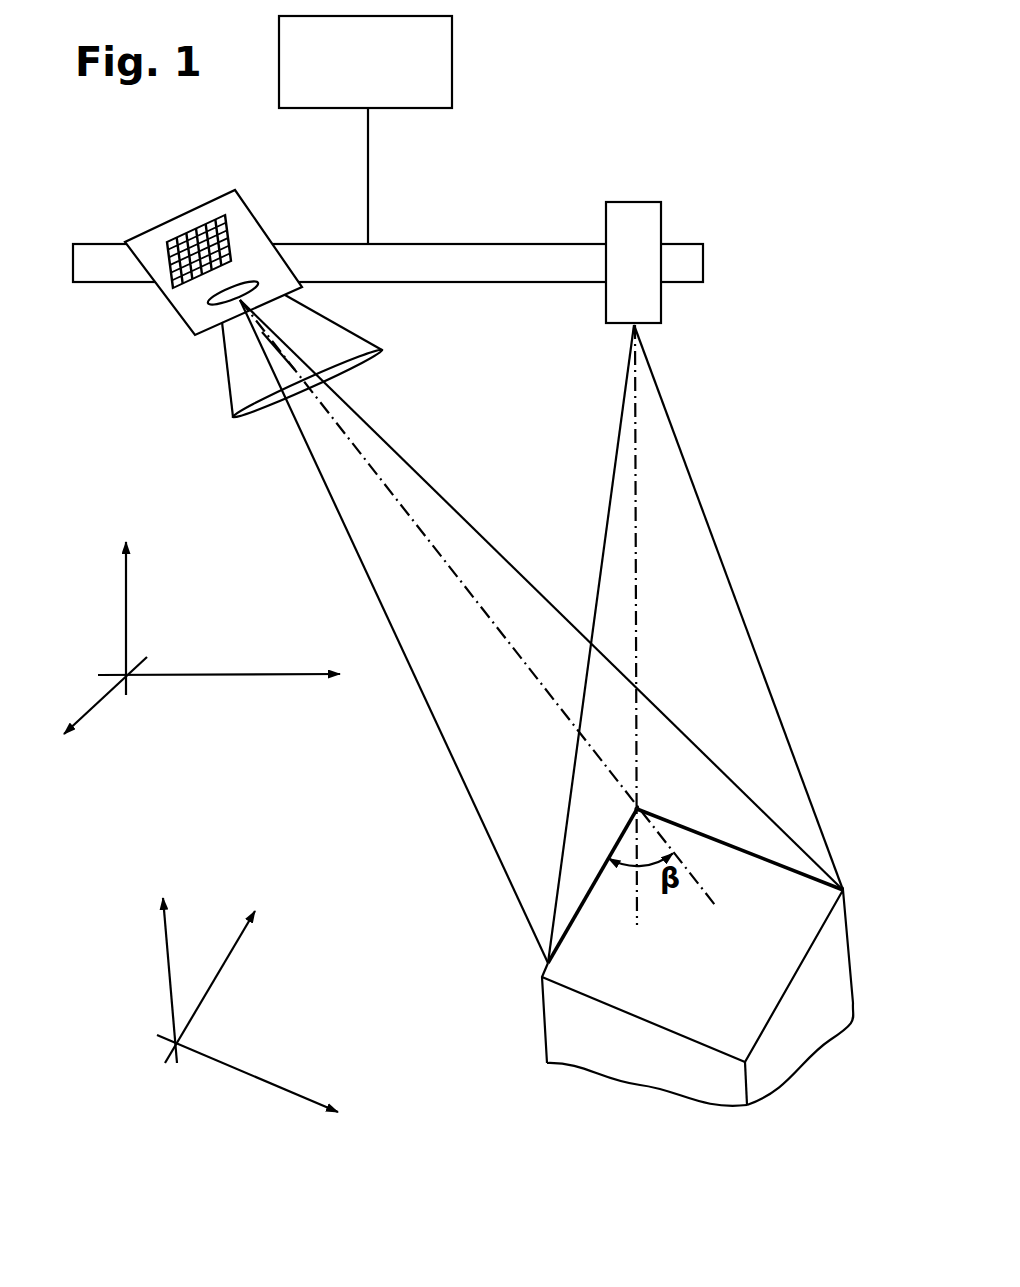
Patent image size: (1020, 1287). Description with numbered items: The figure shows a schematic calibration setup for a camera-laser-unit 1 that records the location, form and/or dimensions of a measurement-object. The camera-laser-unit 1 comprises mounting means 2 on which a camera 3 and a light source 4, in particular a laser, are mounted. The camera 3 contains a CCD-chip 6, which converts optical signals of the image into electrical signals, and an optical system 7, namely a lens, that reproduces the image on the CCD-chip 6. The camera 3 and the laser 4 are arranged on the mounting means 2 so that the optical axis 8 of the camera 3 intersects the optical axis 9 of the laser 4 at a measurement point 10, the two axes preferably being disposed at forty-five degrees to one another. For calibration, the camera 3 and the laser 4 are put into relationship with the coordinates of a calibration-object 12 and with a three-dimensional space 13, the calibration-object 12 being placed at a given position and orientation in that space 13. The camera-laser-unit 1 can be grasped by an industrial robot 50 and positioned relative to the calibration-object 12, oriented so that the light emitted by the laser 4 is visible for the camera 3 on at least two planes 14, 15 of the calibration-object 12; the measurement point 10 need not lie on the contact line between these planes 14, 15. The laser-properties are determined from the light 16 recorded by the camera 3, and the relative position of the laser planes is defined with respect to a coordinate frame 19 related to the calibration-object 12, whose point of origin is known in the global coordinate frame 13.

The camera-laser-unit 1 is at (500, 164).
The mounting means 2 is at (436, 244).
The camera 3 is at (237, 228).
The light source 4 is at (632, 233).
The CCD-chip 6 is at (208, 223).
The optical system 7 is at (218, 312).
The optical axis of the camera 8 is at (363, 455).
The optical axis of the laser 9 is at (624, 455).
The measurement point 10 is at (633, 807).
The calibration-object 12 is at (718, 965).
The three-dimensional space 13 is at (126, 602).
The plane of the calibration-object 14 is at (778, 866).
The plane of the calibration-object 15 is at (577, 928).
The light recorded by the camera 16 is at (169, 224).
The coordinate frame 19 is at (167, 960).
The industrial robot 50 is at (365, 62).